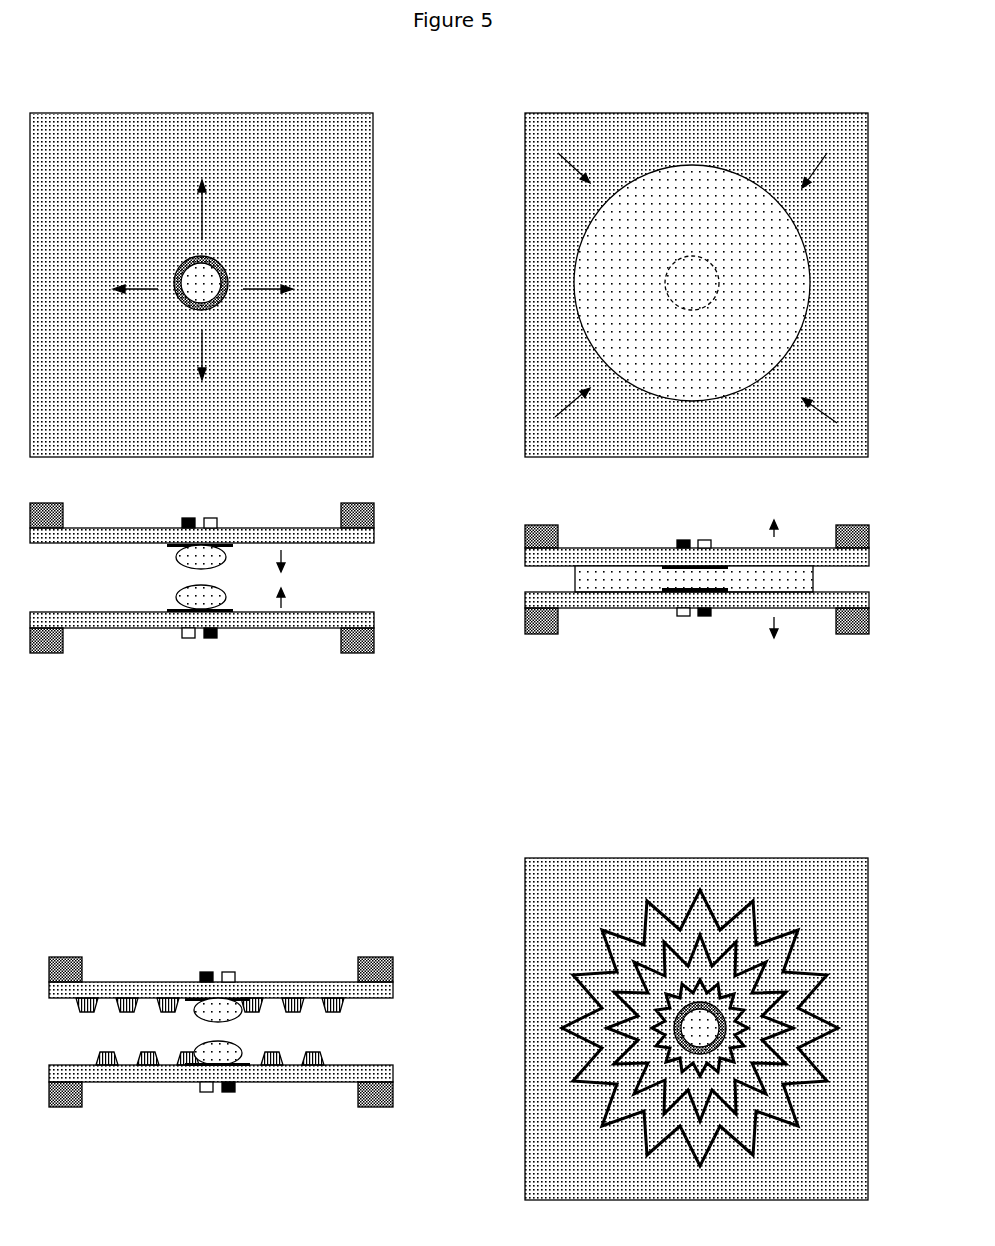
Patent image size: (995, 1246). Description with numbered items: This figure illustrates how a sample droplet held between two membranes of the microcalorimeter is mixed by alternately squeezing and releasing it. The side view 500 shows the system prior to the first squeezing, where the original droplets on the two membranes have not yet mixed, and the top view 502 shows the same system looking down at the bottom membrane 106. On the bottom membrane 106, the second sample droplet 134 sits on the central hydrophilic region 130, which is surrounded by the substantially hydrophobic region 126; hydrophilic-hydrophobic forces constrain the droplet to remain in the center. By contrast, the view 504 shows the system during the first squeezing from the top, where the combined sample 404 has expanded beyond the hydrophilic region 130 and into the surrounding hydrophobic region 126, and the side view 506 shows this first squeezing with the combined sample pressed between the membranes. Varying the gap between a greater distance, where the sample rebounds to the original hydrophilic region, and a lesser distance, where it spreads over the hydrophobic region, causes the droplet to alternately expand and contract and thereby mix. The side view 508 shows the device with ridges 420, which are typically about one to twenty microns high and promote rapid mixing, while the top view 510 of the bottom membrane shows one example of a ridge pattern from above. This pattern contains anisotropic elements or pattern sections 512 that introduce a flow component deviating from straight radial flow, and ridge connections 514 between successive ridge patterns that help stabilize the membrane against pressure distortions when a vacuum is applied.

The top view of the system prior to squeezing 502 is at (198, 60).
The bottom membrane 106 is at (383, 132).
The hydrophobic region 126 is at (333, 227).
The hydrophilic region 130 is at (194, 262).
The second sample droplet 134 is at (205, 278).
The view of the system during the first squeezing 504 is at (677, 78).
The combined sample 404 is at (697, 185).
The side view of the system prior to squeezing 500 is at (377, 574).
The side view of the first squeezing 506 is at (492, 578).
The side view of the device with ridges 508 is at (153, 877).
The ridges 420 is at (332, 1047).
The top view of the bottom membrane with ridge pattern 510 is at (593, 802).
The anisotropic pattern sections 512 is at (693, 963).
The ridge connections 514 is at (618, 1083).